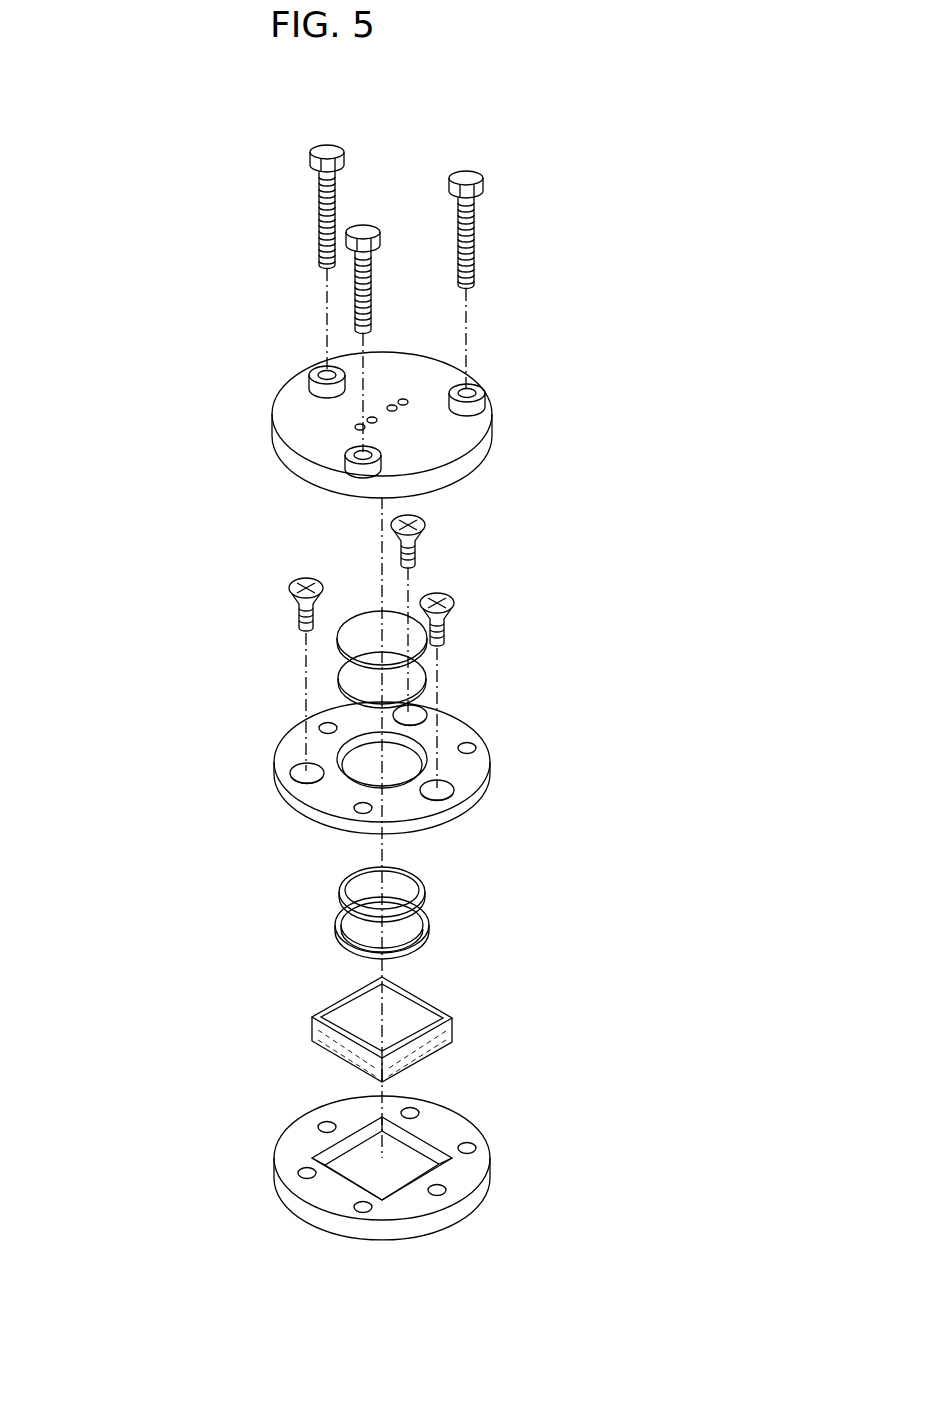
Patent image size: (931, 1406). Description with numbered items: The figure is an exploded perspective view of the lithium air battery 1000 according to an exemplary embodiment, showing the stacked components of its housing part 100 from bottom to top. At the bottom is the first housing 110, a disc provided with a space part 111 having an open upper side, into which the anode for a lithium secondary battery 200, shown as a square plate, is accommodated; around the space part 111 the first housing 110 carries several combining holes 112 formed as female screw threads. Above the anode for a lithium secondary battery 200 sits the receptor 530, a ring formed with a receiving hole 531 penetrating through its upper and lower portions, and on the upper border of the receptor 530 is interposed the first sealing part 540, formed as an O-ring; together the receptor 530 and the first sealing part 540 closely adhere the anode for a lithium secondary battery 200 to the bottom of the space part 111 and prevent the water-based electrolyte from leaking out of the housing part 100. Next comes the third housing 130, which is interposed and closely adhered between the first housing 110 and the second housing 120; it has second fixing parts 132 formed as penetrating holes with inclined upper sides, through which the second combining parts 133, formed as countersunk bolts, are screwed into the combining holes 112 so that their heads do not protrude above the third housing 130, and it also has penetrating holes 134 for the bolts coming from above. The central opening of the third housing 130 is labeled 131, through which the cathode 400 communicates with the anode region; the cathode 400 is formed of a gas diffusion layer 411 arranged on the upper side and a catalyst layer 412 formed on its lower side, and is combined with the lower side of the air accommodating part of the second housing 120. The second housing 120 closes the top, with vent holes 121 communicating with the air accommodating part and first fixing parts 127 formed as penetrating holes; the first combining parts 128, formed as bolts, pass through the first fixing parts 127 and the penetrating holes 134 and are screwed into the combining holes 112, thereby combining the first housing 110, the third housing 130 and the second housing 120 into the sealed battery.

The lithium air battery 1000 is at (134, 246).
The housing part 100 is at (160, 1146).
The first housing 110 is at (287, 1150).
The space part 111 is at (365, 1174).
The combining hole 112 is at (476, 1148).
The second housing 120 is at (295, 463).
The vent hole 121 is at (369, 419).
The first fixing part 127 is at (327, 368).
The first combining part 128 is at (477, 215).
The third housing 130 is at (290, 750).
The central opening 131 is at (375, 768).
The second fixing part 132 is at (297, 773).
The second combining part 133 is at (299, 620).
The penetrating hole 134 is at (476, 748).
The anode for a lithium secondary battery 200 is at (455, 1025).
The cathode 400 is at (535, 648).
The gas diffusion layer 411 is at (410, 648).
The catalyst layer 412 is at (400, 683).
The receptor 530 is at (430, 930).
The receiving hole 531 is at (396, 929).
The first sealing part 540 is at (425, 887).